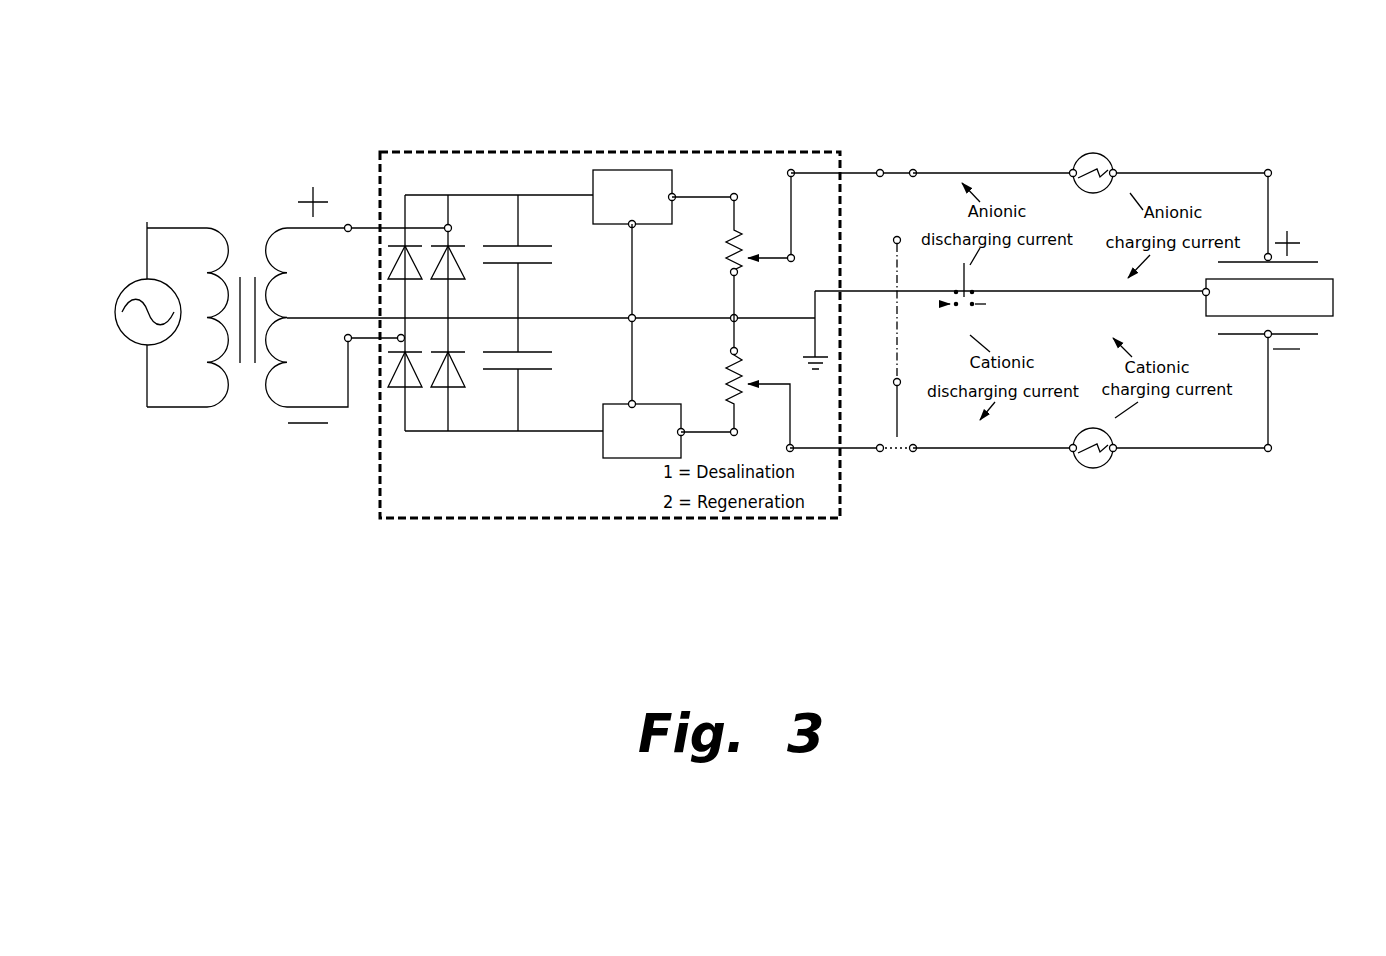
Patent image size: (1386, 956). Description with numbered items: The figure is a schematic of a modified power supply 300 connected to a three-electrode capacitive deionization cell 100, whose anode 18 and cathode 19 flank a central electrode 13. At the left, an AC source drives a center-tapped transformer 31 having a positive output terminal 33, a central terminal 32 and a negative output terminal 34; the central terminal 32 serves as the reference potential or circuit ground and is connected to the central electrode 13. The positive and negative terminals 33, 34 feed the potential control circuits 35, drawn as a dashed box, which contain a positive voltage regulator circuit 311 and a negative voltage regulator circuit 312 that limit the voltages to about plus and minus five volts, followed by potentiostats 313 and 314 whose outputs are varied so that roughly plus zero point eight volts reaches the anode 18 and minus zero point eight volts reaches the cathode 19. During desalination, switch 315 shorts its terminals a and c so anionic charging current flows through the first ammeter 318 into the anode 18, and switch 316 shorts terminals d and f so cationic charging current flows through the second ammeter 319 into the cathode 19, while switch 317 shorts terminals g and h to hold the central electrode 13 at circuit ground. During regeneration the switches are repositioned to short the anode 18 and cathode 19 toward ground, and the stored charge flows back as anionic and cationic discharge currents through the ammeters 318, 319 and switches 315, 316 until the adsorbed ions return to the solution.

The modified power supply 300 is at (1218, 100).
The capacitive deionization cell 100 is at (1287, 259).
The central electrode 13 is at (1334, 296).
The anode 18 is at (1264, 254).
The cathode 19 is at (1307, 336).
The center-tapped transformer 31 is at (249, 186).
The central terminal 32 is at (300, 317).
The positive output terminal 33 is at (333, 226).
The negative output terminal 34 is at (337, 409).
The potential control circuits 35 is at (700, 151).
The positive voltage regulator circuit 311 is at (645, 169).
The negative voltage regulator circuit 312 is at (602, 447).
The potentiostat 313 is at (741, 230).
The potentiostat 314 is at (738, 405).
The switch 315 is at (907, 133).
The switch 316 is at (898, 472).
The switch 317 is at (993, 302).
The first ammeter 318 is at (1092, 152).
The second ammeter 319 is at (1094, 469).